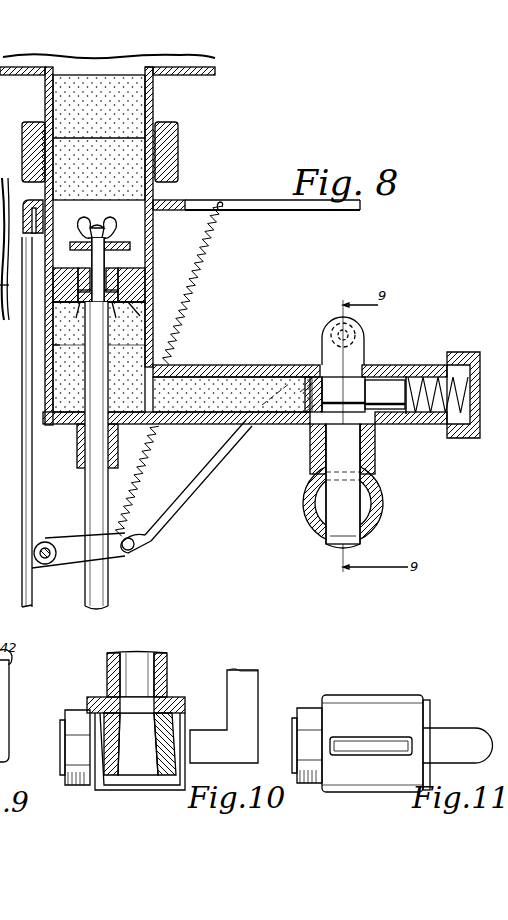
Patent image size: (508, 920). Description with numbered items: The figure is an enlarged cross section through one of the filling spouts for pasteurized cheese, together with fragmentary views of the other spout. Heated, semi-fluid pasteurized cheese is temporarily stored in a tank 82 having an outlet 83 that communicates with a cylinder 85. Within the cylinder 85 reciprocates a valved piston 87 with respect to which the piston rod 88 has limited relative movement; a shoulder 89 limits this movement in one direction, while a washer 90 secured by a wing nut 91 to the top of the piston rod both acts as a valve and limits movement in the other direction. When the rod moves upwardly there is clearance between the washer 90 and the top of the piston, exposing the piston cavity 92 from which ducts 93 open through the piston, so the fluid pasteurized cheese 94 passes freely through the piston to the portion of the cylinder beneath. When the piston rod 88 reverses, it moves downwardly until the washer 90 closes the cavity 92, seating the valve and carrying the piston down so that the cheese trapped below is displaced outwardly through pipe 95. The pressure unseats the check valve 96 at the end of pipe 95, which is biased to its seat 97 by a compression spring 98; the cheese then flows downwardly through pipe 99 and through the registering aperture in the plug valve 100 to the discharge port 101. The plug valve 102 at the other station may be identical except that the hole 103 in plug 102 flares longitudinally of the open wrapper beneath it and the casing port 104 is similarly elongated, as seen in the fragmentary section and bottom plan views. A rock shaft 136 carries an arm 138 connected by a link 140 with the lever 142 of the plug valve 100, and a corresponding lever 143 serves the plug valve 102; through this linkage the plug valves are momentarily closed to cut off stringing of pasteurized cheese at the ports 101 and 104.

In FIG. 8, the tank 82 is at (215, 77).
In FIG. 8, the outlet 83 is at (153, 107).
In FIG. 8, the cylinder 85 is at (155, 305).
In FIG. 8, the valved piston 87 is at (178, 345).
In FIG. 8, the piston rod 88 is at (84, 480).
In FIG. 8, the shoulder 89 is at (98, 302).
In FIG. 8, the washer 90 is at (118, 246).
In FIG. 8, the wing nut 91 is at (112, 225).
In FIG. 8, the piston cavity 92 is at (112, 278).
In FIG. 8, the ducts 93 is at (101, 318).
In FIG. 8, the pasteurized cheese 94 is at (122, 192).
In FIG. 8, the pipe 95 is at (238, 365).
In FIG. 8, the check valve 96 is at (322, 397).
In FIG. 8, the seat 97 is at (312, 398).
In FIG. 8, the compression spring 98 is at (420, 376).
In FIG. 8, the pipe 99 is at (343, 455).
In FIG. 8, the plug valve 100 is at (360, 510).
In FIG. 8, the discharge port 101 is at (336, 545).
In FIG. 10, the plug valve 102 is at (185, 713).
In FIG. 11, the plug valve 102 is at (430, 722).
In FIG. 10, the hole 103 is at (120, 760).
In FIG. 10, the casing port 104 is at (158, 782).
In FIG. 11, the casing port 104 is at (348, 741).
In FIG. 8, the rock shaft 136 is at (50, 545).
In FIG. 8, the arm 138 is at (75, 560).
In FIG. 8, the link 140 is at (196, 482).
In FIG. 8, the lever 142 is at (360, 345).
In FIG. 10, the lever 143 is at (250, 680).